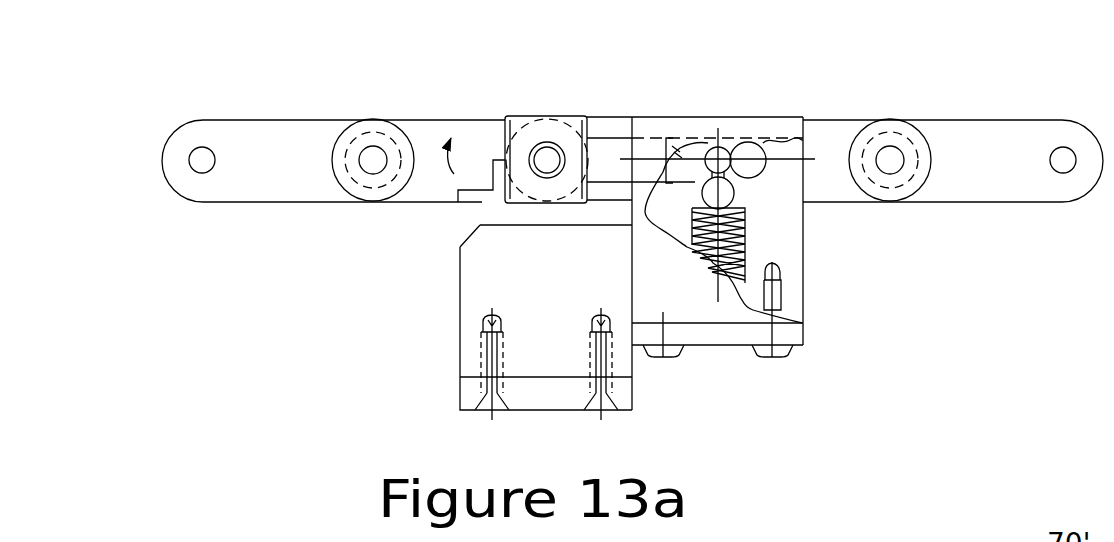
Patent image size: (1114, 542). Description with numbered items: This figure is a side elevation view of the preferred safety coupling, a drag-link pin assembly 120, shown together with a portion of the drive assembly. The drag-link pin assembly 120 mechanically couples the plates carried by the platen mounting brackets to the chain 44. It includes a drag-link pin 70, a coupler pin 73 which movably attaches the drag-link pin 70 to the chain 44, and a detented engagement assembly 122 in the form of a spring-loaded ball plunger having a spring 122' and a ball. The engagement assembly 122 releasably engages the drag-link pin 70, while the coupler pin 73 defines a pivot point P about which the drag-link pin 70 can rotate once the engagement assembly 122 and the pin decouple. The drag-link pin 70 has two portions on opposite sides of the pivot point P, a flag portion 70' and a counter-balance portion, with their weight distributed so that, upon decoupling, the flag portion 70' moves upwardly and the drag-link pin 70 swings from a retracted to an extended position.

The chain 44 is at (950, 119).
The coupler pin 73 is at (522, 144).
The pivot point P is at (539, 153).
The drag-link pin 70 is at (647, 228).
The flag portion 70' is at (444, 208).
The drag-link pin assembly 120 is at (322, 343).
The detented engagement assembly 122 is at (719, 225).
The spring 122' is at (804, 254).